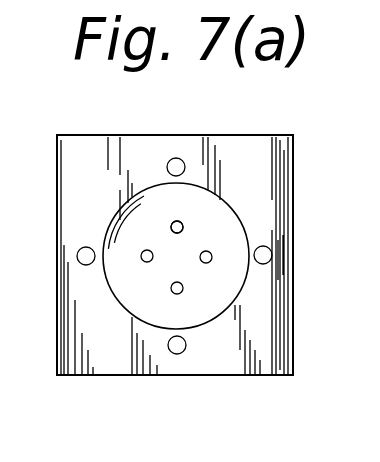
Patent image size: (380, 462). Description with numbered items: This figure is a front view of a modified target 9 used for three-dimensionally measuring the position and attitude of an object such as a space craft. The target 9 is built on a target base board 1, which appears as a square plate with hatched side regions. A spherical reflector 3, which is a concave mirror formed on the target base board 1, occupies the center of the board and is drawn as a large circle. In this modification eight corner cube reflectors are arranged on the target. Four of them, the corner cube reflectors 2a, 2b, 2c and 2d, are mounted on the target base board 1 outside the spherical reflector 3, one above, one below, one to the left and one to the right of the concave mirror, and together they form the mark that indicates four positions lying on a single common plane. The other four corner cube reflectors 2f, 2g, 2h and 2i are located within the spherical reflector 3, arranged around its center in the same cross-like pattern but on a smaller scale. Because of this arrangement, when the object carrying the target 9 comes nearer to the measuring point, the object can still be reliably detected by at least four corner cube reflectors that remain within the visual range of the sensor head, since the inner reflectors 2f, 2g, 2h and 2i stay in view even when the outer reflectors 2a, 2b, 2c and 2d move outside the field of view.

The target base board 1 is at (262, 136).
The corner cube reflector 2a is at (181, 158).
The corner cube reflector 2b is at (80, 250).
The corner cube reflector 2c is at (272, 255).
The corner cube reflector 2d is at (184, 352).
The corner cube reflector 2f is at (255, 199).
The corner cube reflector 2g is at (211, 253).
The corner cube reflector 2h is at (146, 249).
The corner cube reflector 2i is at (180, 291).
The spherical reflector 3 is at (245, 282).
The target 9 is at (182, 223).